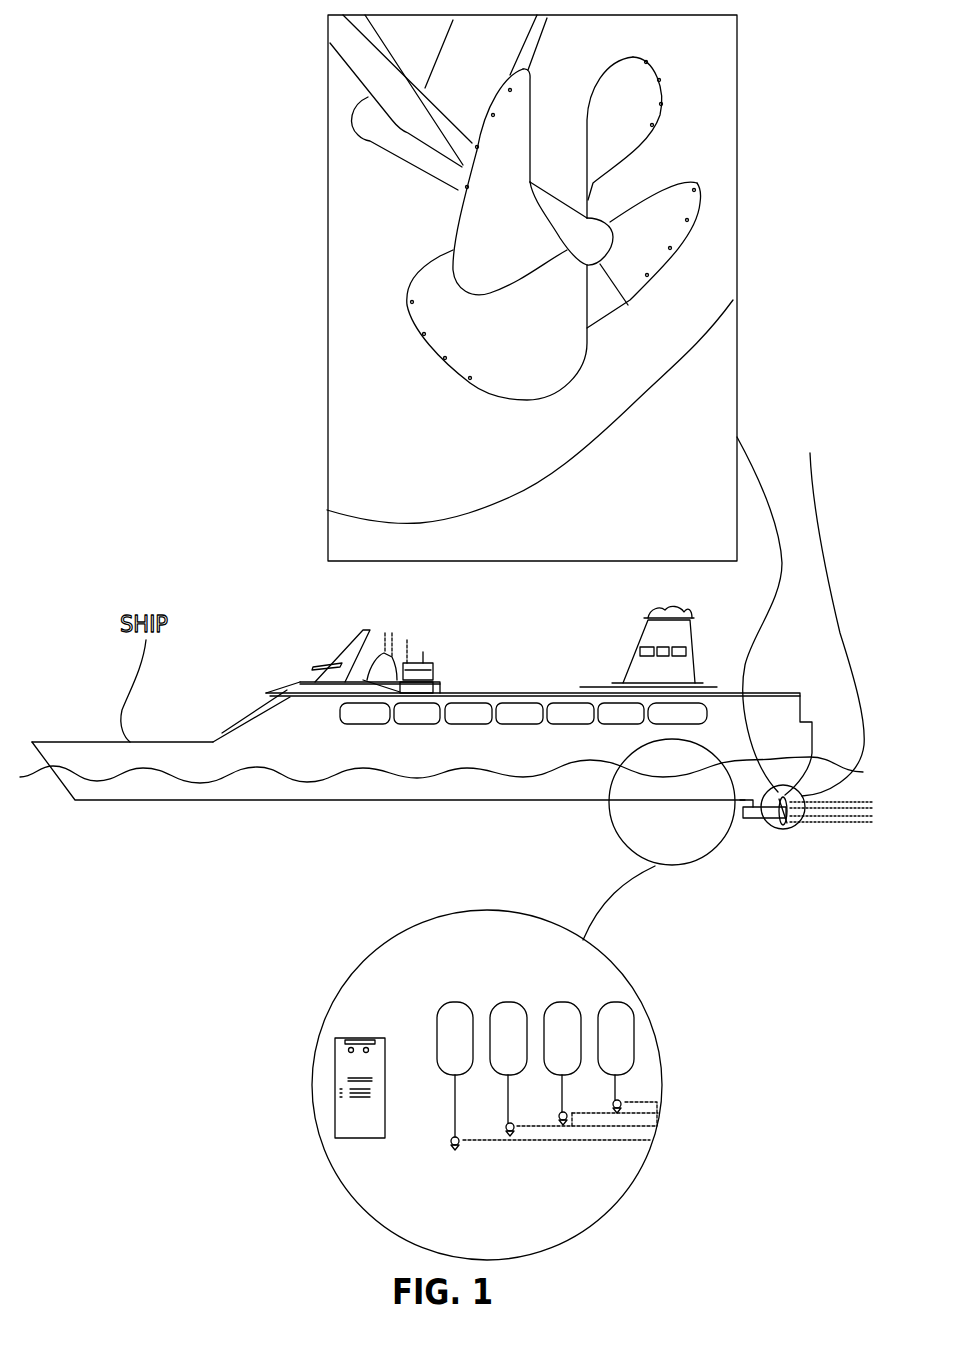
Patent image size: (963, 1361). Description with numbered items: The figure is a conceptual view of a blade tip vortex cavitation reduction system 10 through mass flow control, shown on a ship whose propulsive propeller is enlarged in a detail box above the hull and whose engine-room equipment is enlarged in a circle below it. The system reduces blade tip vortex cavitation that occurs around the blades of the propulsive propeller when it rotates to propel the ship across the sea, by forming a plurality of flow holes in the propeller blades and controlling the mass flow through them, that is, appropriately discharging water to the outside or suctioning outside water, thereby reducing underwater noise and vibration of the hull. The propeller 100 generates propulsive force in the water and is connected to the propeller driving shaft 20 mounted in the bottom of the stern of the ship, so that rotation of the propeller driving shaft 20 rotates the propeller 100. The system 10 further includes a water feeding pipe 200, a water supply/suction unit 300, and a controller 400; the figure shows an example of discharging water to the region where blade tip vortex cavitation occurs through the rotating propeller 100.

The blade tip vortex cavitation reduction system 10 is at (627, 307).
The propeller 100 is at (554, 228).
The propeller driving shaft 20 is at (762, 829).
The water feeding pipe 200 is at (560, 1142).
The water supply/suction unit 300 is at (613, 1103).
The controller 400 is at (358, 1038).